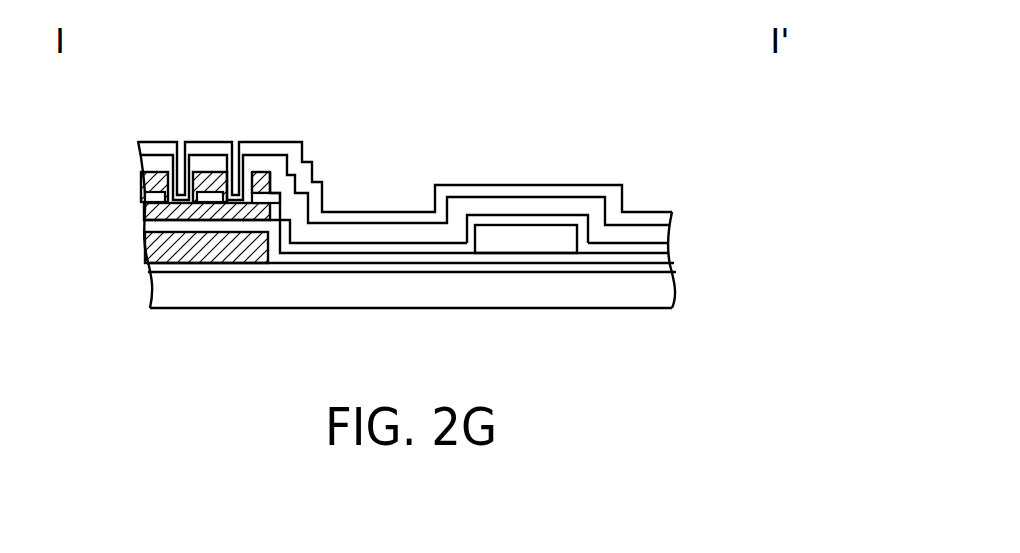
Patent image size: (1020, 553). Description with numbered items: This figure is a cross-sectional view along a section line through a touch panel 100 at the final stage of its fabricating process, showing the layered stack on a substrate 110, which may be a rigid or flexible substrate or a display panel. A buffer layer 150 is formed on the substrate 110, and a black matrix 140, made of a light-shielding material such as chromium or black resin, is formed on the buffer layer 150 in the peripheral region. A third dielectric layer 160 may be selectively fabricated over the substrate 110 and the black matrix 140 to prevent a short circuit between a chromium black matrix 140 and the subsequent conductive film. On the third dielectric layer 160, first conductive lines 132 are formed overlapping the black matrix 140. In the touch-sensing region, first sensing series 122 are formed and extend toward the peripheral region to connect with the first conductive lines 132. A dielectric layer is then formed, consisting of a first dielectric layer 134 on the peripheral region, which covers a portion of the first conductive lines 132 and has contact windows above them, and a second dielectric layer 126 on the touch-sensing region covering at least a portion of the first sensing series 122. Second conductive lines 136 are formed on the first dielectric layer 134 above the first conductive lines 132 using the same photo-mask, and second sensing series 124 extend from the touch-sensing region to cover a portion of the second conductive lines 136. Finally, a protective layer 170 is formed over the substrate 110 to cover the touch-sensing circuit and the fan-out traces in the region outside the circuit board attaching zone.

The touch panel 100 is at (699, 371).
The substrate 110 is at (660, 292).
The buffer layer 150 is at (652, 265).
The third dielectric layer 160 is at (149, 226).
The black matrix 140 is at (152, 250).
The first conductive lines 132 is at (151, 210).
The first dielectric layer 134 is at (155, 197).
The second conductive lines 136 is at (144, 180).
The first sensing series 122 is at (568, 238).
The second dielectric layer 126 is at (582, 220).
The second sensing series 124 is at (146, 160).
The protective layer 170 is at (153, 145).